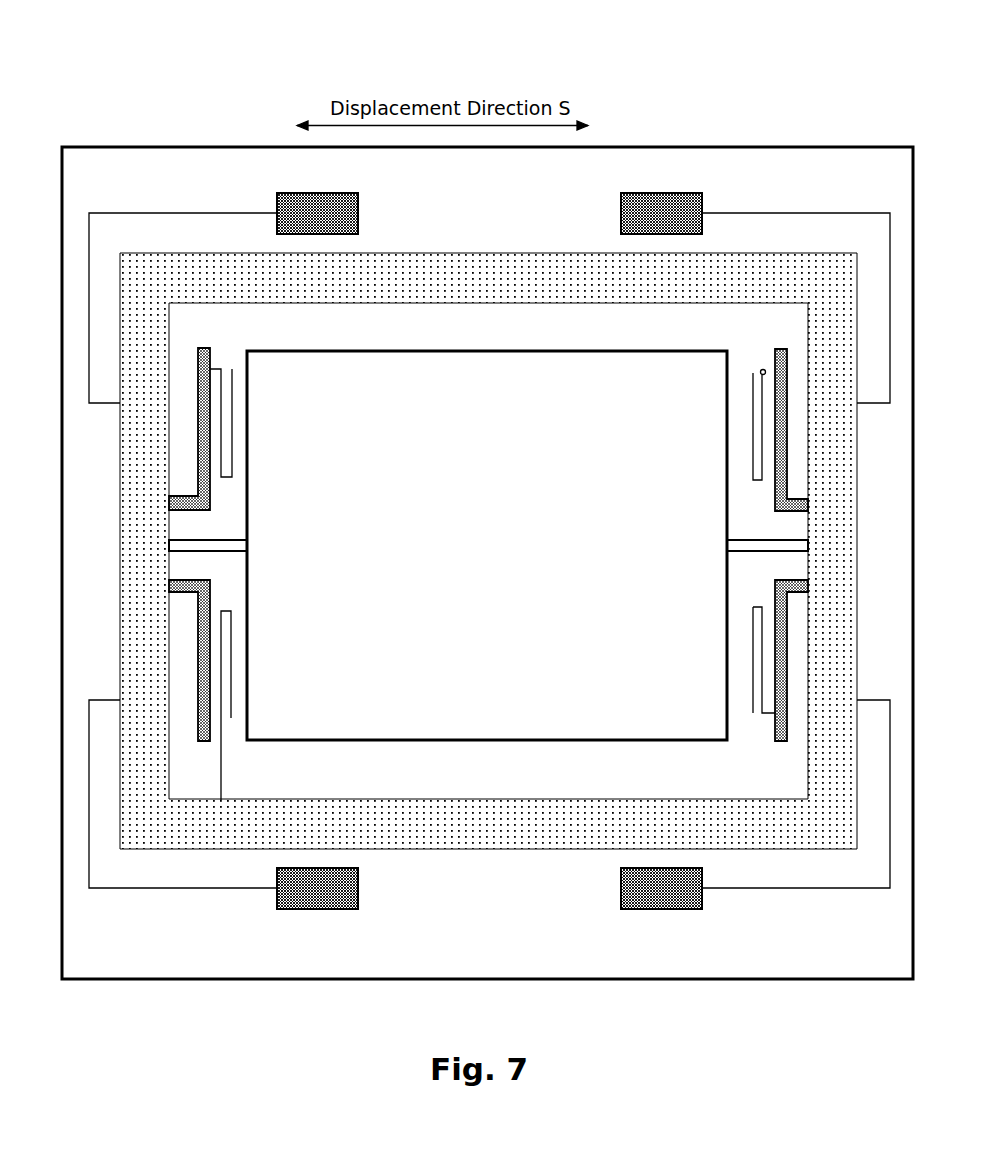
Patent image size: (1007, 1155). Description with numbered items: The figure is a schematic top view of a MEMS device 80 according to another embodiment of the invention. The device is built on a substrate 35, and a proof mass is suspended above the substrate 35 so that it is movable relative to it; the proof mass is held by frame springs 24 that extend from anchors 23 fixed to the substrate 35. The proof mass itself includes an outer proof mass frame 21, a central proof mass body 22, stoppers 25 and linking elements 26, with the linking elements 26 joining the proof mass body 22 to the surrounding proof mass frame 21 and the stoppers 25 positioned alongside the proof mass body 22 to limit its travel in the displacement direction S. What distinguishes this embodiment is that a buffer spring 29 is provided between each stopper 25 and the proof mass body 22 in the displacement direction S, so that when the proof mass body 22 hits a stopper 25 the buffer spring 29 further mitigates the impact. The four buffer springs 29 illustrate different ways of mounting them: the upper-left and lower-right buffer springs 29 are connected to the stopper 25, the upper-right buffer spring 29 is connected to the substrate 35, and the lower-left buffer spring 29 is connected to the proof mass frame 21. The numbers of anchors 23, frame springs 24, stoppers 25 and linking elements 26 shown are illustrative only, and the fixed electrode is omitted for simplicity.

The MEMS device 80 is at (780, 72).
The substrate 35 is at (297, 980).
The frame spring 24 is at (232, 212).
The anchor 23 is at (338, 192).
The proof mass frame 21 is at (610, 254).
The proof mass body 22 is at (488, 576).
The linking element 26 is at (248, 547).
The stopper 25 is at (205, 348).
The buffer spring 29 is at (235, 480).